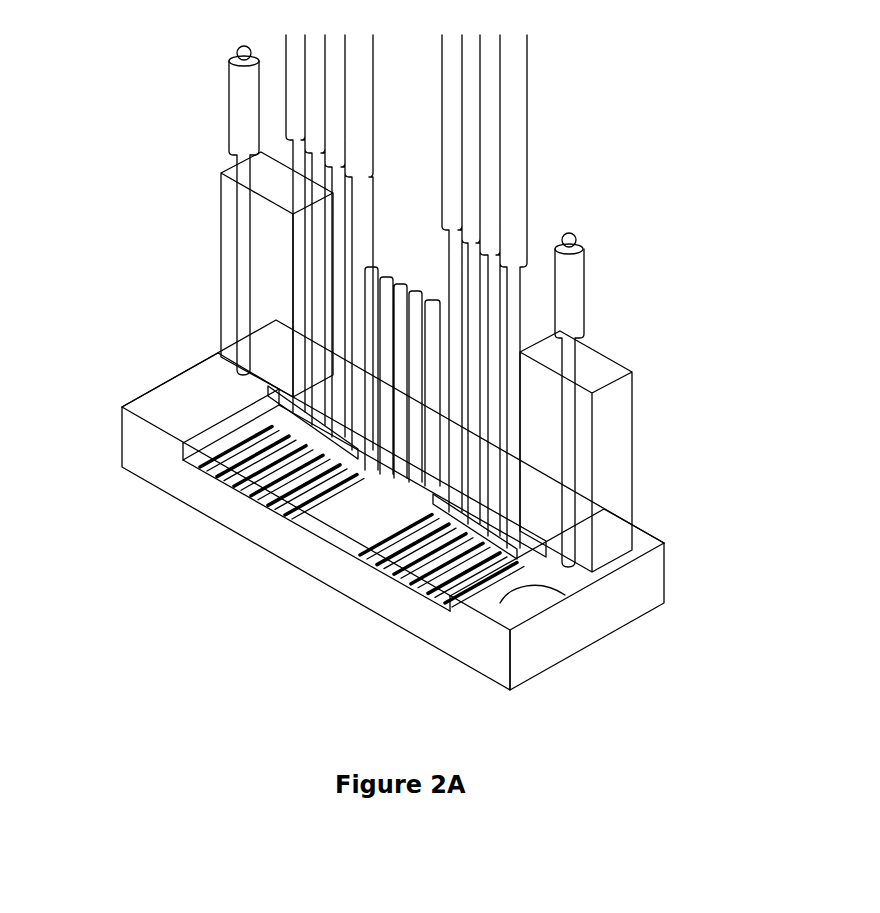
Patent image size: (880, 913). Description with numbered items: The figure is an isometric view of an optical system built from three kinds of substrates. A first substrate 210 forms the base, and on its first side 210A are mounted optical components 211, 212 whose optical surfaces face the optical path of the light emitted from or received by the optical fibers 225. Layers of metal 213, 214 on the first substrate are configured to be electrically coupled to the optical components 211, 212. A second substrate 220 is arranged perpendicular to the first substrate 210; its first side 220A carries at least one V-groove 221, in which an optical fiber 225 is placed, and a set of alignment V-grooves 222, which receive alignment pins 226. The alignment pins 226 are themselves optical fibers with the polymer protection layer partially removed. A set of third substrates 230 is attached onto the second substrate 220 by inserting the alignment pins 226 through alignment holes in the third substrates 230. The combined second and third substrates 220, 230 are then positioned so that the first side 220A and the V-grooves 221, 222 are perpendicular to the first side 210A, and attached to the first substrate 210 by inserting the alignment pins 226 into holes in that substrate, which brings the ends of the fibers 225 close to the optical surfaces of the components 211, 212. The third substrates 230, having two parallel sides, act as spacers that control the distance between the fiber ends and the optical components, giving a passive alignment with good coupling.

The first substrate 210 is at (145, 458).
The first side of the first substrate 210A is at (360, 520).
The optical component 211 is at (290, 395).
The optical component 212 is at (510, 540).
The layer of metal 213 is at (232, 447).
The layer of metal 214 is at (440, 525).
The second substrate 220 is at (620, 447).
The first side of the second substrate 220A is at (272, 288).
The V-groove 221 is at (385, 282).
The alignment V-groove 222 is at (600, 355).
The optical fiber 225 is at (300, 267).
The alignment pin 226 is at (565, 595).
The third substrate 230 is at (180, 393).